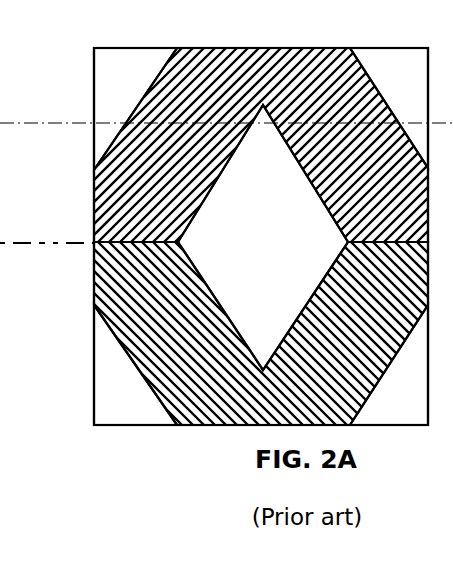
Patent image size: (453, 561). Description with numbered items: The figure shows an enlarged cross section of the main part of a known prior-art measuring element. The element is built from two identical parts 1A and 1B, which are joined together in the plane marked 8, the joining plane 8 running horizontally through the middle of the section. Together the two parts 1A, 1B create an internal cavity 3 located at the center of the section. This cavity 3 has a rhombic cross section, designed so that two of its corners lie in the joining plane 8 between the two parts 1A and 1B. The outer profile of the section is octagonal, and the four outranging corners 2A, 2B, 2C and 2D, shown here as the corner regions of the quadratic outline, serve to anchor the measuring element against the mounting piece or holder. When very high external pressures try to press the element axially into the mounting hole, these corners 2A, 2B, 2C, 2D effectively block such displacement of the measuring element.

The first part of measuring element 1A is at (223, 403).
The second part of measuring element 1B is at (288, 53).
The corner 2A is at (398, 403).
The corner 2B is at (413, 50).
The corner 2C is at (107, 88).
The corner 2D is at (120, 403).
The internal cavity 3 is at (283, 245).
The joining plane 8 is at (44, 243).